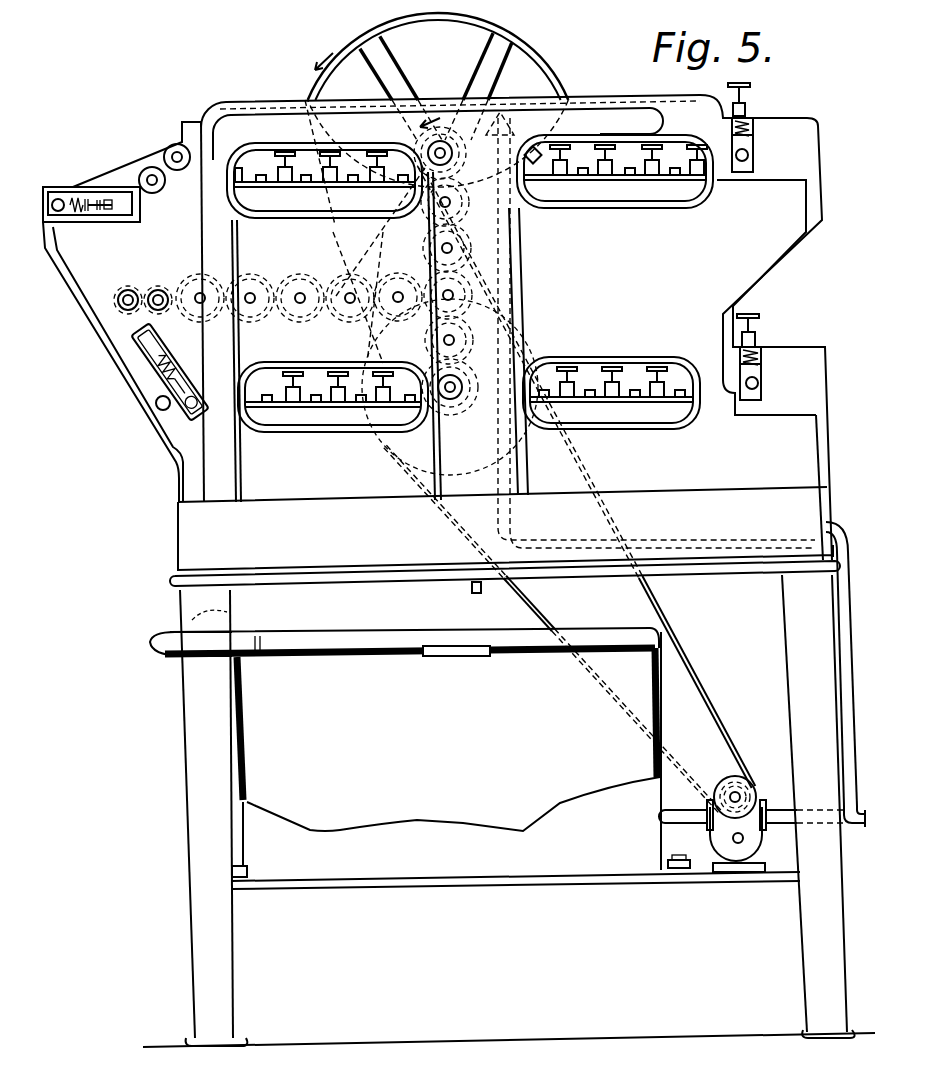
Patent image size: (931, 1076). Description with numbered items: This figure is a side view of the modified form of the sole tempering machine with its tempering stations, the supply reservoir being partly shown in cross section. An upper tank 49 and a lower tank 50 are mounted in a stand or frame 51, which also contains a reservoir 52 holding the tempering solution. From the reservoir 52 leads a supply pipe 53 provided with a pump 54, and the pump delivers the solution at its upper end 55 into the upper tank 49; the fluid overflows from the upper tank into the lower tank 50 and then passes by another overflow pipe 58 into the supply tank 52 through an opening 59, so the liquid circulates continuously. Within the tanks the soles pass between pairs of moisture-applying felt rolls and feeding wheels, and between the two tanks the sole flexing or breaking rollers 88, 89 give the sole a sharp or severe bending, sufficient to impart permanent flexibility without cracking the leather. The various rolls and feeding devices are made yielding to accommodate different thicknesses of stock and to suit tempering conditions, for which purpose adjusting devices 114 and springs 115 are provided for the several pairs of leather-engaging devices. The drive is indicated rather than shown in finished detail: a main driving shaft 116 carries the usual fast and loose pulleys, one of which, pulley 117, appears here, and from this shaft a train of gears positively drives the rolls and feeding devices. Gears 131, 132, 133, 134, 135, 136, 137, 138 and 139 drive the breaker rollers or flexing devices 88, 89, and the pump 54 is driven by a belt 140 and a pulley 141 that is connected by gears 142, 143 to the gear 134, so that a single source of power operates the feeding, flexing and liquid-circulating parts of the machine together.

The upper tank 49 is at (665, 196).
The lower tank 50 is at (663, 413).
The stand or frame 51 is at (505, 536).
The reservoir 52 is at (412, 739).
The supply pipe 53 is at (692, 818).
The pump 54 is at (746, 792).
The upper end of the pump 55 is at (540, 152).
The overflow pipe 58 is at (470, 590).
The opening 59 is at (473, 650).
The sole flexing roller 88 is at (168, 290).
The sole flexing roller 89 is at (130, 290).
The adjusting device 114 is at (330, 168).
The spring 115 is at (752, 128).
The main driving shaft 116 is at (441, 146).
The fast pulley 117 is at (517, 42).
The gear 131 is at (492, 111).
The gear 132 is at (468, 212).
The gear 133 is at (470, 255).
The gear 134 is at (472, 298).
The gear 135 is at (403, 322).
The gear 136 is at (348, 322).
The gear 137 is at (292, 320).
The gear 138 is at (262, 264).
The gear 139 is at (176, 316).
The belt 140 is at (661, 612).
The pulley 141 is at (542, 351).
The gear 142 is at (462, 405).
The gear 143 is at (474, 338).